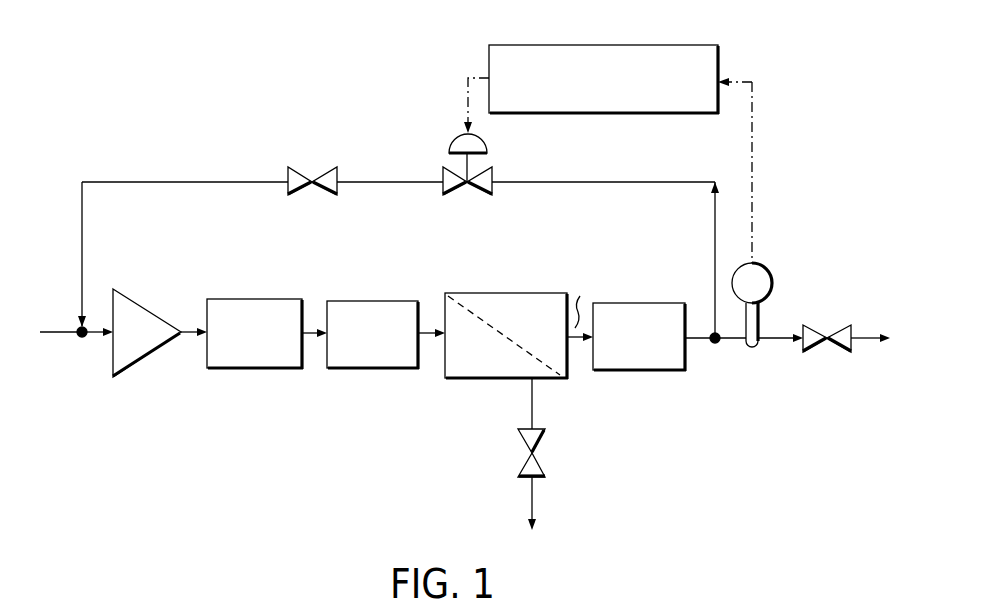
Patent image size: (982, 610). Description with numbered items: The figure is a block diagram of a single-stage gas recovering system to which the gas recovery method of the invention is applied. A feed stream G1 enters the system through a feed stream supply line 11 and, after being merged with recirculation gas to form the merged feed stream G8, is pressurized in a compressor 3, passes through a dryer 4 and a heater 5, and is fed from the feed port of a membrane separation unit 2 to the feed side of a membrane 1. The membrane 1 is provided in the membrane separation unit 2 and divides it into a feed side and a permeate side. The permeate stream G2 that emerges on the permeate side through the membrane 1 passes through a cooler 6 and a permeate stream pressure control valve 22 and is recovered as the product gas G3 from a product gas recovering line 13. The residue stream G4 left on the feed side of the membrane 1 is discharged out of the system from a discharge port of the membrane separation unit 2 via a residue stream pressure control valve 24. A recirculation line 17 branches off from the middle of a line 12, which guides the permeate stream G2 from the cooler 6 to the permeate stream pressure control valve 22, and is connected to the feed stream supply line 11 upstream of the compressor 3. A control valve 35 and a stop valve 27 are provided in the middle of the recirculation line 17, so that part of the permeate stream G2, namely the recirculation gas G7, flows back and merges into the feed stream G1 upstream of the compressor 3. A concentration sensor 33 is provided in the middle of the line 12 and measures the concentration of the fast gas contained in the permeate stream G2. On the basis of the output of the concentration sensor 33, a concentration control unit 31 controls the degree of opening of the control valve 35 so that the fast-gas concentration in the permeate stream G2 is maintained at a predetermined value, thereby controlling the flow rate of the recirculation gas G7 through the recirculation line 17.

The membrane 1 is at (473, 310).
The membrane separation unit 2 is at (556, 296).
The compressor 3 is at (125, 362).
The dryer 4 is at (295, 358).
The heater 5 is at (370, 360).
The cooler 6 is at (637, 368).
The feed stream supply line 11 is at (57, 338).
The line 12 is at (700, 343).
The product gas recovering line 13 is at (866, 345).
The recirculation line 17 is at (607, 182).
The permeate stream pressure control valve 22 is at (822, 352).
The residue stream pressure control valve 24 is at (548, 458).
The stop valve 27 is at (326, 167).
The concentration control unit 31 is at (622, 45).
The concentration sensor 33 is at (762, 318).
The control valve 35 is at (447, 172).
The feed stream G1 is at (56, 318).
The permeate stream G2 is at (587, 300).
The product gas G3 is at (872, 323).
The residue stream G4 is at (516, 403).
The recirculation gas G7 is at (699, 266).
The feed stream (after merged) G8 is at (95, 348).